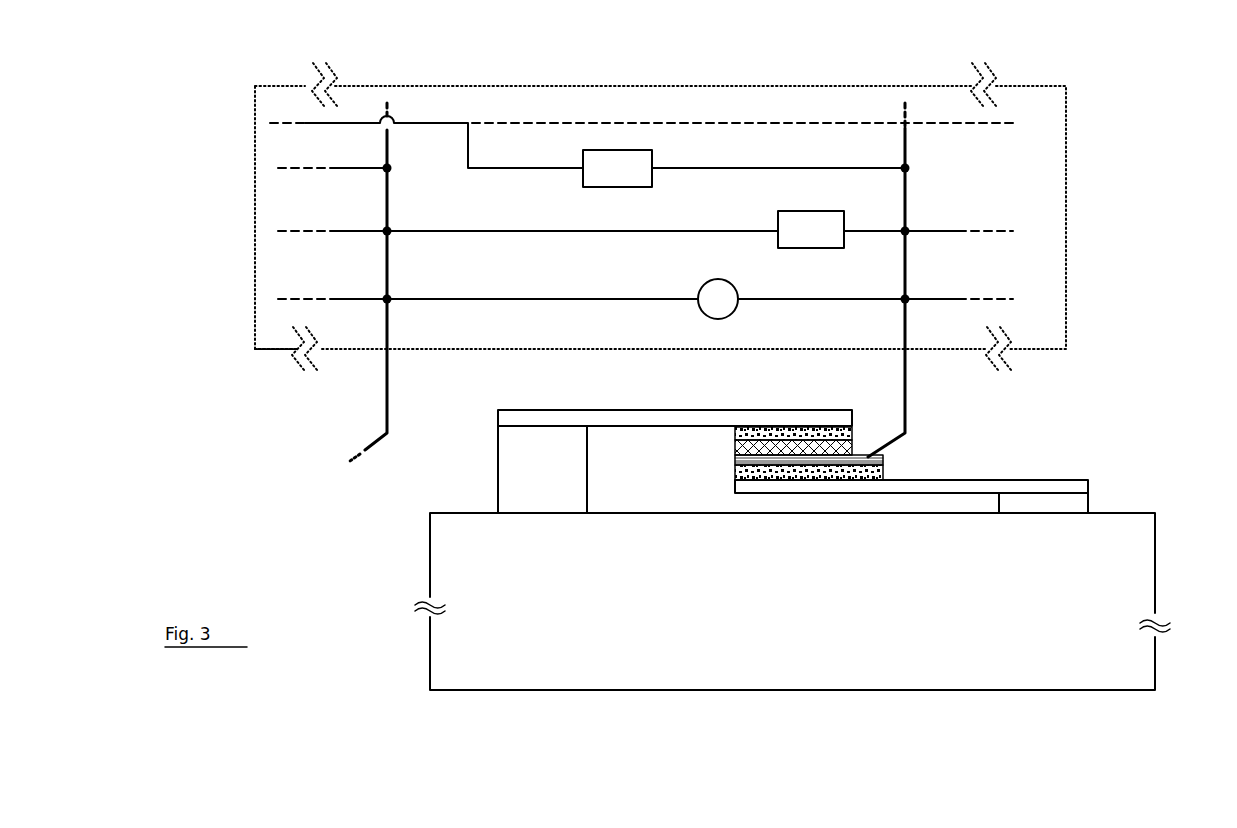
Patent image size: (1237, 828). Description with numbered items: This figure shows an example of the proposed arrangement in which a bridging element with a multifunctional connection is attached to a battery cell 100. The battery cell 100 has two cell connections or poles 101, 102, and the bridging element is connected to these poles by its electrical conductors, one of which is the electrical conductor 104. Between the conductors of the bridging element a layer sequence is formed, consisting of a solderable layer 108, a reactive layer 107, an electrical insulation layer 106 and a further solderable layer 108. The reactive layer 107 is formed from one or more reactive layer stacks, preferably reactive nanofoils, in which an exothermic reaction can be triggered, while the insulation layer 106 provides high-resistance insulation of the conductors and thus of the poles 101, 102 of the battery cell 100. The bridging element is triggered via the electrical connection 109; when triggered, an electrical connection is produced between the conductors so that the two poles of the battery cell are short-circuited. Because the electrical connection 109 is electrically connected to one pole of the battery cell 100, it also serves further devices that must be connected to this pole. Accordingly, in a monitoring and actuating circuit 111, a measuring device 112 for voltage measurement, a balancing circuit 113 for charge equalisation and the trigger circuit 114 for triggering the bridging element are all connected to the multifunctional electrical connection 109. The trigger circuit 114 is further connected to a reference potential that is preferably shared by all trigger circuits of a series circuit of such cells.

The battery cell 100 is at (1156, 570).
The cell connection 101 is at (1089, 502).
The cell connection 102 is at (497, 466).
The electrical conductor 104 is at (630, 409).
The electrical insulation layer 106 is at (853, 440).
The reactive layer 107 is at (884, 460).
The solderable layer 108 is at (733, 436).
The electrical connection 109 is at (906, 390).
The monitoring and actuating circuit 111 is at (830, 82).
The measuring device 112 is at (704, 309).
The balancing circuit 113 is at (793, 210).
The trigger circuit 114 is at (578, 178).